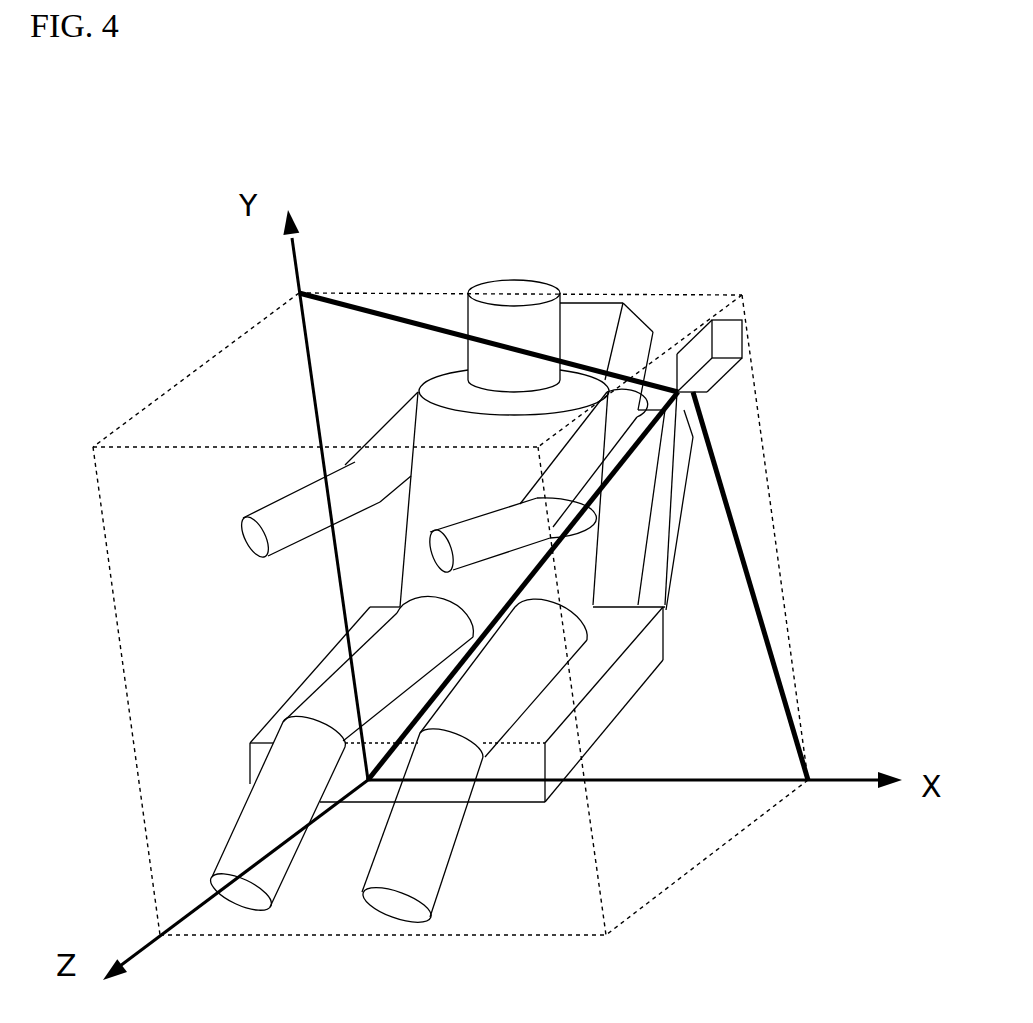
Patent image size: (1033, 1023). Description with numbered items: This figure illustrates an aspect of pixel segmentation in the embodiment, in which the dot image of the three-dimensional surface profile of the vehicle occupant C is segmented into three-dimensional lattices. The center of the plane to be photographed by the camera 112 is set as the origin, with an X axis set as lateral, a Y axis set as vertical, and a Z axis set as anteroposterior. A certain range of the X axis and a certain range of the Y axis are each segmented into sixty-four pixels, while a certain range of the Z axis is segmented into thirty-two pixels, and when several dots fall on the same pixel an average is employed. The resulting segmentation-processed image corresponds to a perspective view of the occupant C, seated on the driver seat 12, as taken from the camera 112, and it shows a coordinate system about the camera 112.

The driver seat 12 is at (676, 631).
The camera 112 is at (730, 335).
The occupant C is at (558, 279).